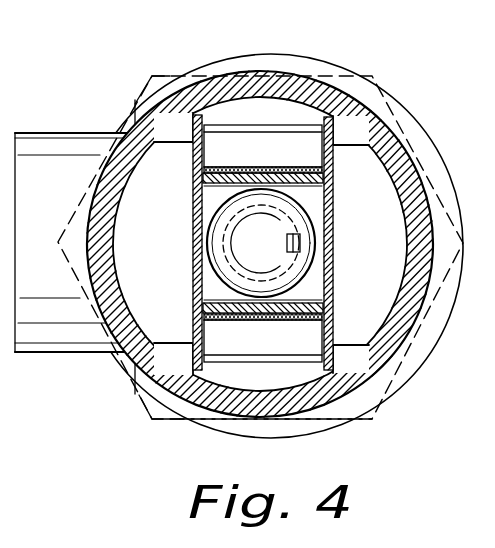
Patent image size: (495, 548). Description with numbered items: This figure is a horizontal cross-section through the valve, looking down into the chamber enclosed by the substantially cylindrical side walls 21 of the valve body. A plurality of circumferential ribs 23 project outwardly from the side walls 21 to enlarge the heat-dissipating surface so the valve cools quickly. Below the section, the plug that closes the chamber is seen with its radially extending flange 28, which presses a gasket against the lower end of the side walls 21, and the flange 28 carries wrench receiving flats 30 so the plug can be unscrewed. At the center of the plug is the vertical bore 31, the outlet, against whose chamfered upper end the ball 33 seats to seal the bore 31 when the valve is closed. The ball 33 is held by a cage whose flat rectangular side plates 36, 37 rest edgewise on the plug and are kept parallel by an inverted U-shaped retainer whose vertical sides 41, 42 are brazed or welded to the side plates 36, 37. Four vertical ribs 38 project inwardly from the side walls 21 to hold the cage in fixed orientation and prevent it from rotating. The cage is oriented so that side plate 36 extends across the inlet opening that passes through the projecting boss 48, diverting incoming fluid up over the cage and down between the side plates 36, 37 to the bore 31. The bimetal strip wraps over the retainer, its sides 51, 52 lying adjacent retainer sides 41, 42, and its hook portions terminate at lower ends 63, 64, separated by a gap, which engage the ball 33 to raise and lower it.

The side walls 21 is at (402, 150).
The circumferential ribs 23 is at (440, 334).
The radially extending flange 28 is at (345, 421).
The wrench receiving flats 30 is at (340, 76).
The vertical bore 31 is at (328, 236).
The ball 33 is at (218, 231).
The side plate 36 is at (197, 253).
The side plate 37 is at (333, 260).
The vertical ribs 38 is at (178, 142).
The retainer side 41 is at (335, 304).
The retainer side 42 is at (203, 176).
The projecting boss 48 is at (67, 133).
The bimetal strip side 51 is at (230, 322).
The bimetal strip side 52 is at (292, 163).
The lower end of hook portion 63 is at (212, 296).
The lower end of hook portion 64 is at (305, 202).